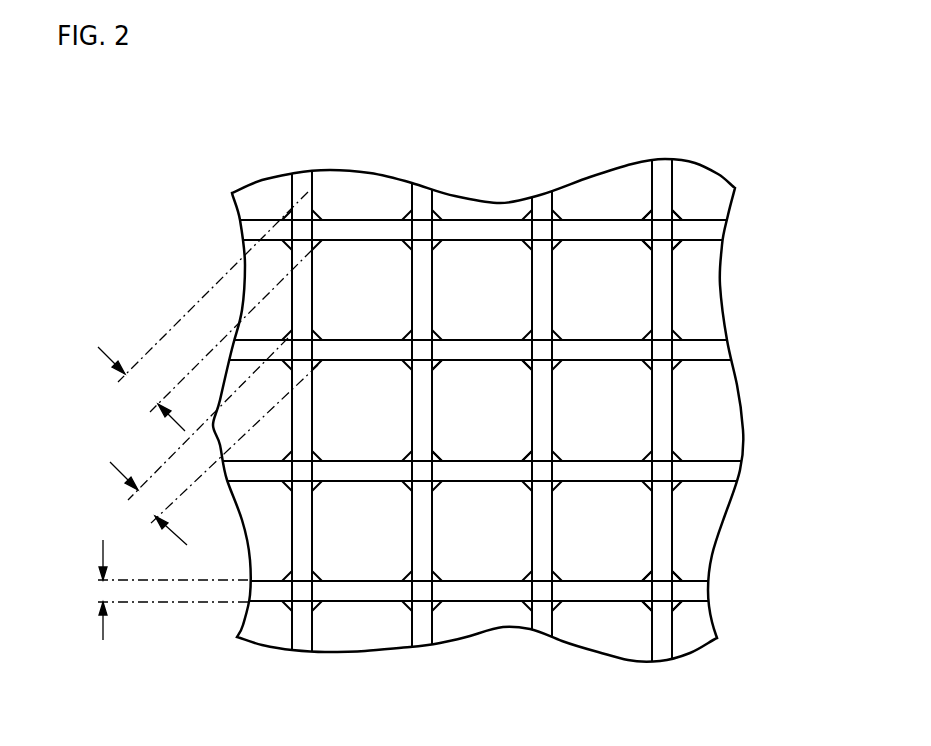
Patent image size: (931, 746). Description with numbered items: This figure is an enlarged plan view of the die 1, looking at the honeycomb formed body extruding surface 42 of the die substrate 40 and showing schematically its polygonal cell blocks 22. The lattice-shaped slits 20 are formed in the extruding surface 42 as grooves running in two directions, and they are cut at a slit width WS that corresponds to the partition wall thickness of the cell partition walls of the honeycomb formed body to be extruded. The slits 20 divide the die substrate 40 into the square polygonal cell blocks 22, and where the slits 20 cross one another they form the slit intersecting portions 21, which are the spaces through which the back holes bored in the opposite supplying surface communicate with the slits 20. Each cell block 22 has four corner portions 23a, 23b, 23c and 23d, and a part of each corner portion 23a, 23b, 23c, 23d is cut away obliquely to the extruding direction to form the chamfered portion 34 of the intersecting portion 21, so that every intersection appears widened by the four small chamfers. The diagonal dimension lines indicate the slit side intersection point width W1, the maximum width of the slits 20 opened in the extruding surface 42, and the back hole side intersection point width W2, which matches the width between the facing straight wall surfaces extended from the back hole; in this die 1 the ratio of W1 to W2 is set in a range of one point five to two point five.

The die 1 is at (656, 90).
The die substrate 40 is at (632, 89).
The honeycomb formed body extruding surface 42 is at (481, 414).
The slits 20 is at (480, 425).
The slit intersecting portions 21 is at (662, 410).
The polygonal cell block 22 is at (481, 410).
The chamfered portion 34 is at (482, 410).
The corner portion 23a is at (527, 456).
The corner portion 23b is at (527, 365).
The corner portion 23c is at (437, 365).
The corner portion 23d is at (437, 456).
The slit side intersection point width W1 is at (140, 396).
The back hole side intersection point width W2 is at (148, 502).
The slit width WS is at (100, 589).